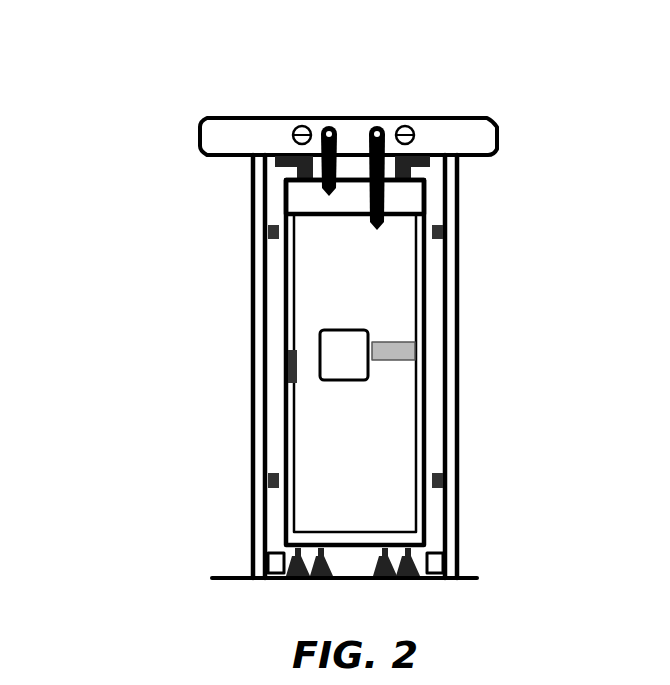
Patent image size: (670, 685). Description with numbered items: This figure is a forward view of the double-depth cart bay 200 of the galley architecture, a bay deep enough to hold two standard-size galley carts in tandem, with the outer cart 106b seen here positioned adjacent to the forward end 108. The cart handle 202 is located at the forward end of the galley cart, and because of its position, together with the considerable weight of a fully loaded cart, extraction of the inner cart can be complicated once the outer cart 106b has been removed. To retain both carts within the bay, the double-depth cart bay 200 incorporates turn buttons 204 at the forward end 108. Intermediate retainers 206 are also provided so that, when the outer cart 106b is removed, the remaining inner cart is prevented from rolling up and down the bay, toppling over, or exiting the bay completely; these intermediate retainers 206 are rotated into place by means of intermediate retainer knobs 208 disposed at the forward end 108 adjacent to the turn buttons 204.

The double-depth cart bay 200 is at (100, 92).
The forward end 108 is at (515, 205).
The intermediate retainer knobs 208 is at (292, 118).
The turn buttons 204 is at (376, 128).
The intermediate retainers 206 is at (303, 184).
The outer cart 106b is at (312, 432).
The cart handle 202 is at (385, 352).